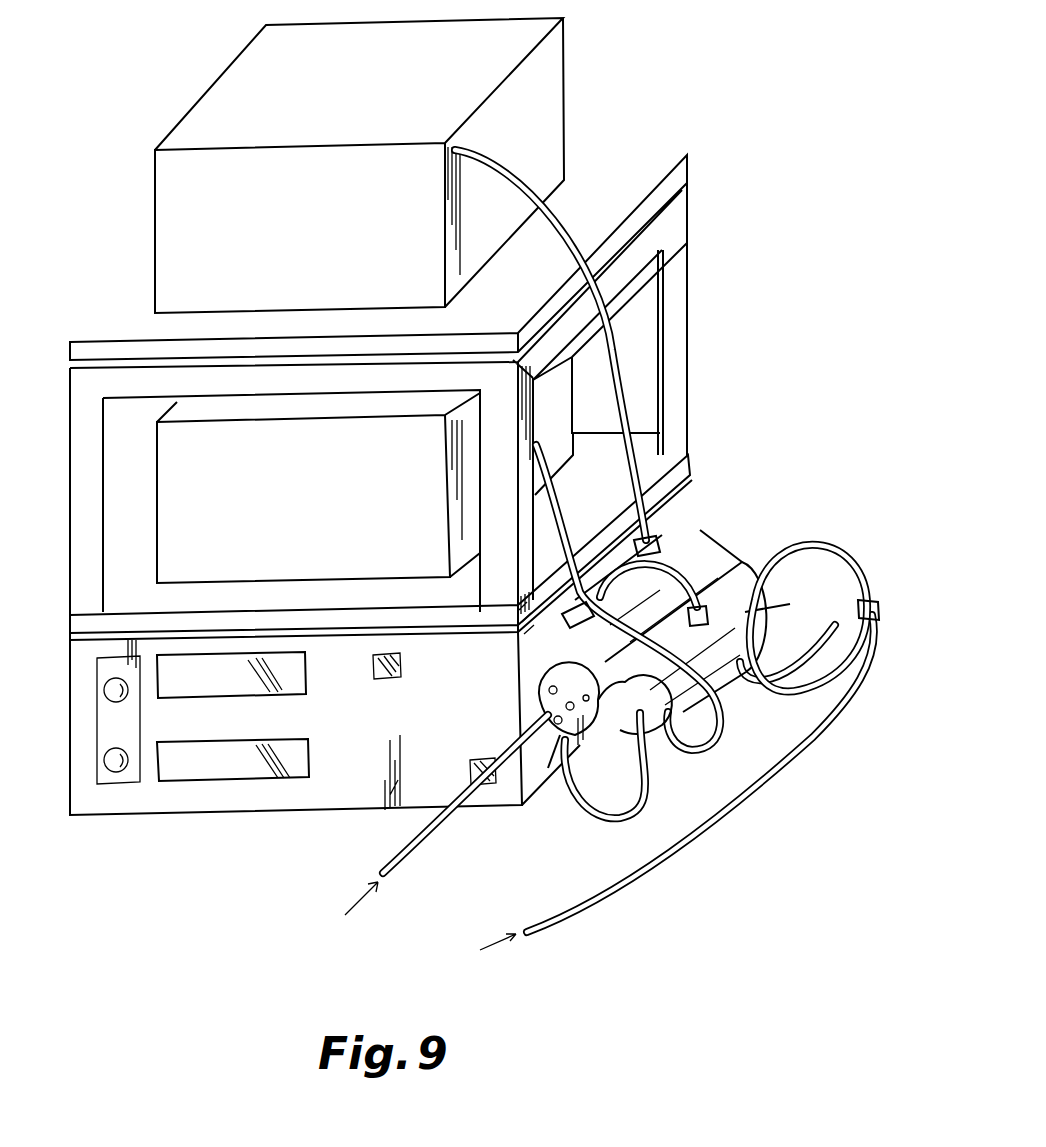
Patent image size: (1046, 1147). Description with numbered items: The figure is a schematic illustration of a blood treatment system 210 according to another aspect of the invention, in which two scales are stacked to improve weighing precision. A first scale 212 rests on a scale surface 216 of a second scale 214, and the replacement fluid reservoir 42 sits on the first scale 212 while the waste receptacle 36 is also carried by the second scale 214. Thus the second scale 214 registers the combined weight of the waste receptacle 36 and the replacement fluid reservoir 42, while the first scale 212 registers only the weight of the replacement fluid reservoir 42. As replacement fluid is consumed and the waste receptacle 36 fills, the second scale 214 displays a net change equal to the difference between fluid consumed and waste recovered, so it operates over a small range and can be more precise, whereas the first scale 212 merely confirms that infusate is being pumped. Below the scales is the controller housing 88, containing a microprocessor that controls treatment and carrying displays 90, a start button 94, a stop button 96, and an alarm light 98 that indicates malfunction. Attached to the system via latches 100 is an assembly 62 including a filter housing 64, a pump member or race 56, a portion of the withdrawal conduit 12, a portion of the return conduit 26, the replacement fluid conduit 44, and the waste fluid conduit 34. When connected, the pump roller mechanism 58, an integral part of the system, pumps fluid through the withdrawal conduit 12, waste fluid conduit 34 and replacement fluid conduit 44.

The blood treatment system 210 is at (721, 112).
The first scale 212 is at (108, 332).
The second scale 214 is at (76, 628).
The scale surface 216 is at (119, 570).
The replacement fluid reservoir 42 is at (298, 238).
The waste receptacle 36 is at (316, 518).
The replacement fluid conduit 44 is at (560, 160).
The waste fluid conduit 34 is at (563, 520).
The latches 100 is at (545, 630).
The assembly 62 is at (790, 518).
The filter housing 64 is at (793, 614).
The pump member 56 is at (585, 742).
The pump roller mechanism 58 is at (548, 768).
The withdrawal conduit 12 is at (420, 838).
The return conduit 26 is at (820, 556).
The controller housing 88 is at (230, 812).
The displays 90 is at (306, 688).
The start button 94 is at (104, 690).
The stop button 96 is at (104, 762).
The alarm light 98 is at (401, 672).